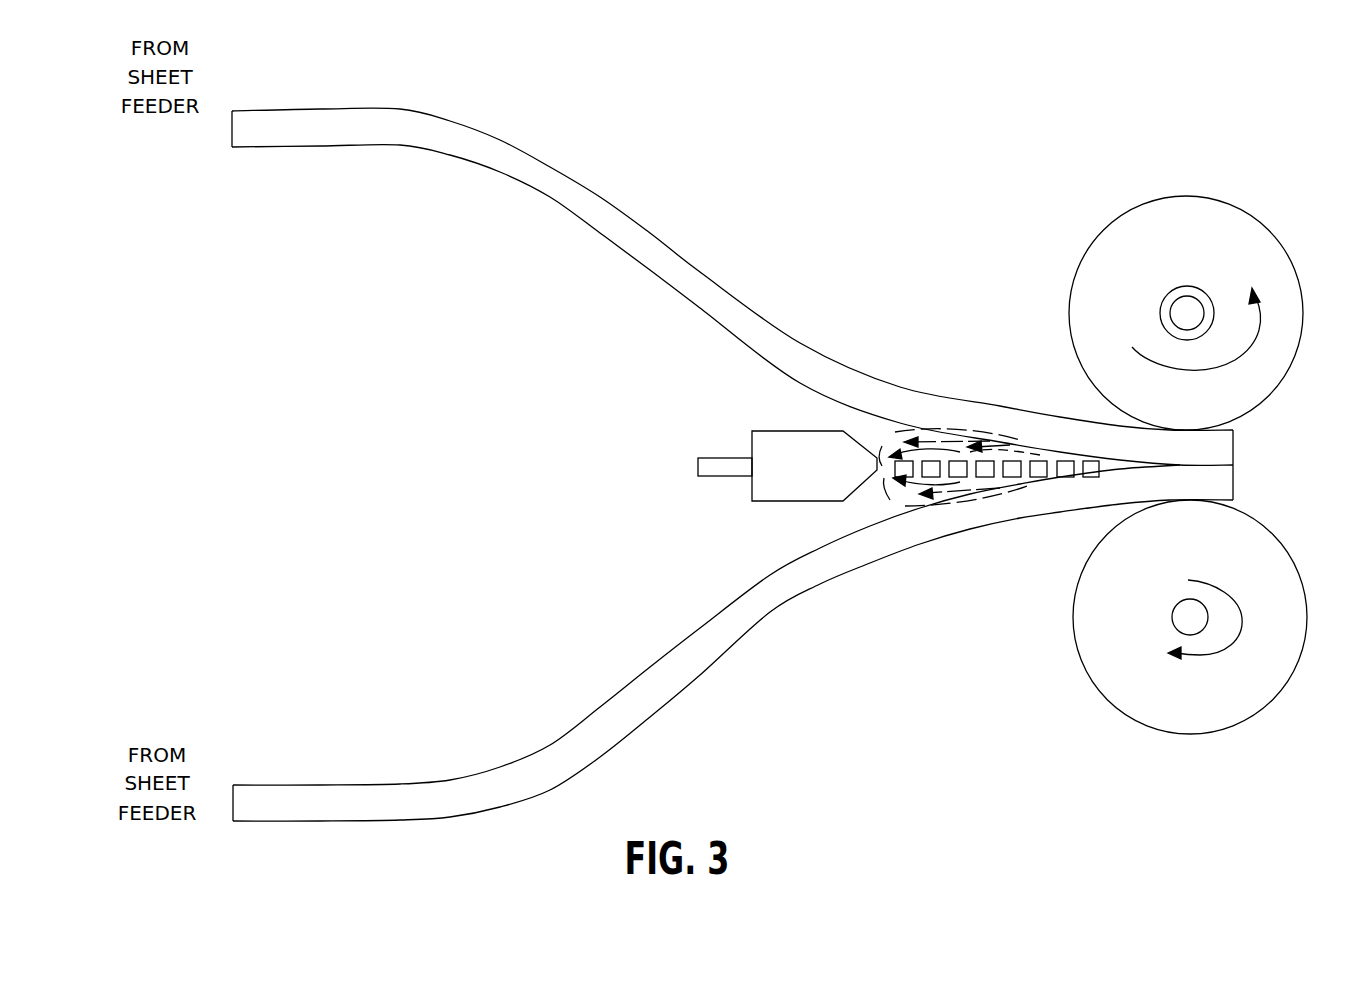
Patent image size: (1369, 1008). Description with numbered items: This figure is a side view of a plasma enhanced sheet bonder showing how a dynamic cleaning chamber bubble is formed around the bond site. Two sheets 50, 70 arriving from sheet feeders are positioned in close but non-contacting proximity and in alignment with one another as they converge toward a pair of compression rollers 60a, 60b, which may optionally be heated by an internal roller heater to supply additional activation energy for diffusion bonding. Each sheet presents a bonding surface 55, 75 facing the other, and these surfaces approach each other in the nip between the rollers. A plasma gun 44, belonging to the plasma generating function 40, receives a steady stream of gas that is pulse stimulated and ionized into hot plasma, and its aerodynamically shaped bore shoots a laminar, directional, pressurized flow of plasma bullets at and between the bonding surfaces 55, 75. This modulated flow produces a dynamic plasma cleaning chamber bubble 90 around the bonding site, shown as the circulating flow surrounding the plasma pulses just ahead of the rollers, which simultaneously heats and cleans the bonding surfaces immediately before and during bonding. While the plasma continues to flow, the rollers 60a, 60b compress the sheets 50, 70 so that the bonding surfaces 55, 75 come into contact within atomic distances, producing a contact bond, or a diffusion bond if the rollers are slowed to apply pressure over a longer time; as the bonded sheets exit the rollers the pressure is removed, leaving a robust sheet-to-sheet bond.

The plasma generating function 40 is at (648, 460).
The plasma gun 44 is at (763, 430).
The sheet 50 is at (612, 203).
The bonding surface 55 is at (675, 330).
The compression roller 60a is at (1293, 262).
The compression roller 60b is at (1287, 545).
The sheet 70 is at (663, 690).
The bonding surface 75 is at (702, 607).
The dynamic plasma cleaning chamber bubble 90 is at (900, 433).